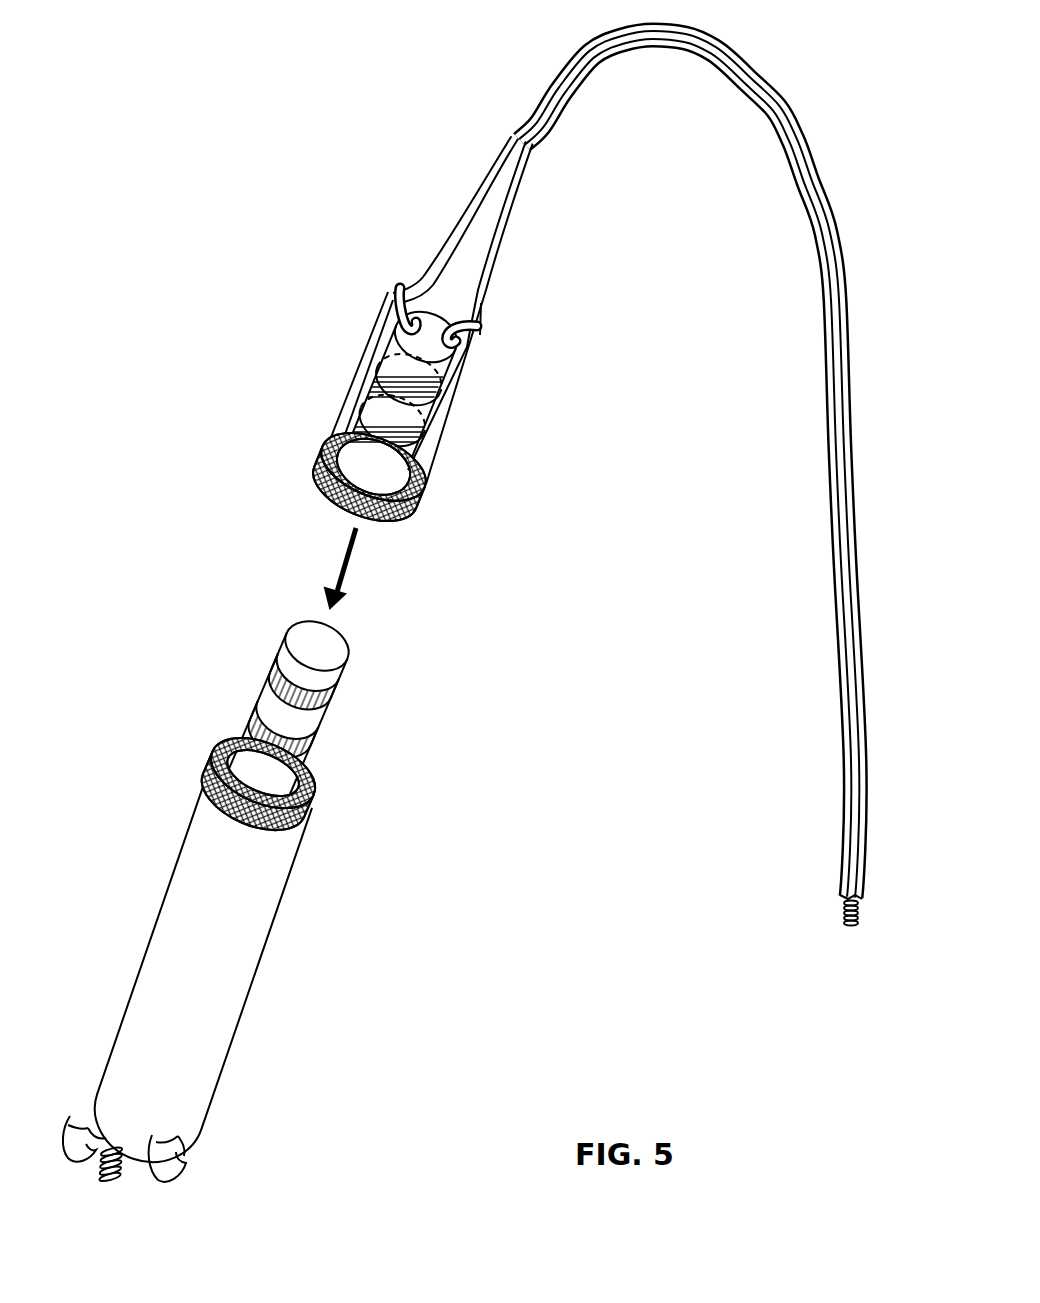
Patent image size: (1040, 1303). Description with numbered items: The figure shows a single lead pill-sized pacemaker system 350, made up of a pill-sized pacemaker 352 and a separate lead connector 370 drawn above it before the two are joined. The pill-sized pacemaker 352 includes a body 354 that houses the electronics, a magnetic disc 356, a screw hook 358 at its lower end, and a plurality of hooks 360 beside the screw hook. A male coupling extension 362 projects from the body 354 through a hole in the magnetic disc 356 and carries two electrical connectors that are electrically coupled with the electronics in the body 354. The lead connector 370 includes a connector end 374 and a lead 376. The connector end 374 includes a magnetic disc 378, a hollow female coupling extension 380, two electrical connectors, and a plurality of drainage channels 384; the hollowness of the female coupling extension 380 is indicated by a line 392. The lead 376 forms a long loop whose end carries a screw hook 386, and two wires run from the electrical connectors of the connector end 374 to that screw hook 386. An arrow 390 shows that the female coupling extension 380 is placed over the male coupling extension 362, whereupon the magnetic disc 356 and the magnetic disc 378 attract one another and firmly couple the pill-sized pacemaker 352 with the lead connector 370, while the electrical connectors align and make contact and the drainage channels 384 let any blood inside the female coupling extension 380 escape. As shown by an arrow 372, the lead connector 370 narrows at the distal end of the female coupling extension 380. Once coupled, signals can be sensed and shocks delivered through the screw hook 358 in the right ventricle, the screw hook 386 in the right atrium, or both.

The single lead pill-sized pacemaker system 350 is at (496, 628).
The pill-sized pacemaker 352 is at (230, 925).
The body 354 is at (206, 974).
The magnetic disc 356 is at (284, 784).
The screw hook 358 is at (107, 1192).
The plurality of hooks 360 is at (137, 1139).
The male coupling extension 362 is at (262, 707).
The lead connector 370 is at (602, 487).
The arrow 372 is at (635, 467).
The connector end 374 is at (330, 385).
The lead 376 is at (664, 487).
The magnetic disc 378 is at (345, 476).
The female coupling extension 380 is at (428, 381).
The plurality of drainage channels 384 is at (437, 317).
The screw hook 386 is at (814, 921).
The arrow 390 is at (381, 568).
The line 392 is at (354, 409).